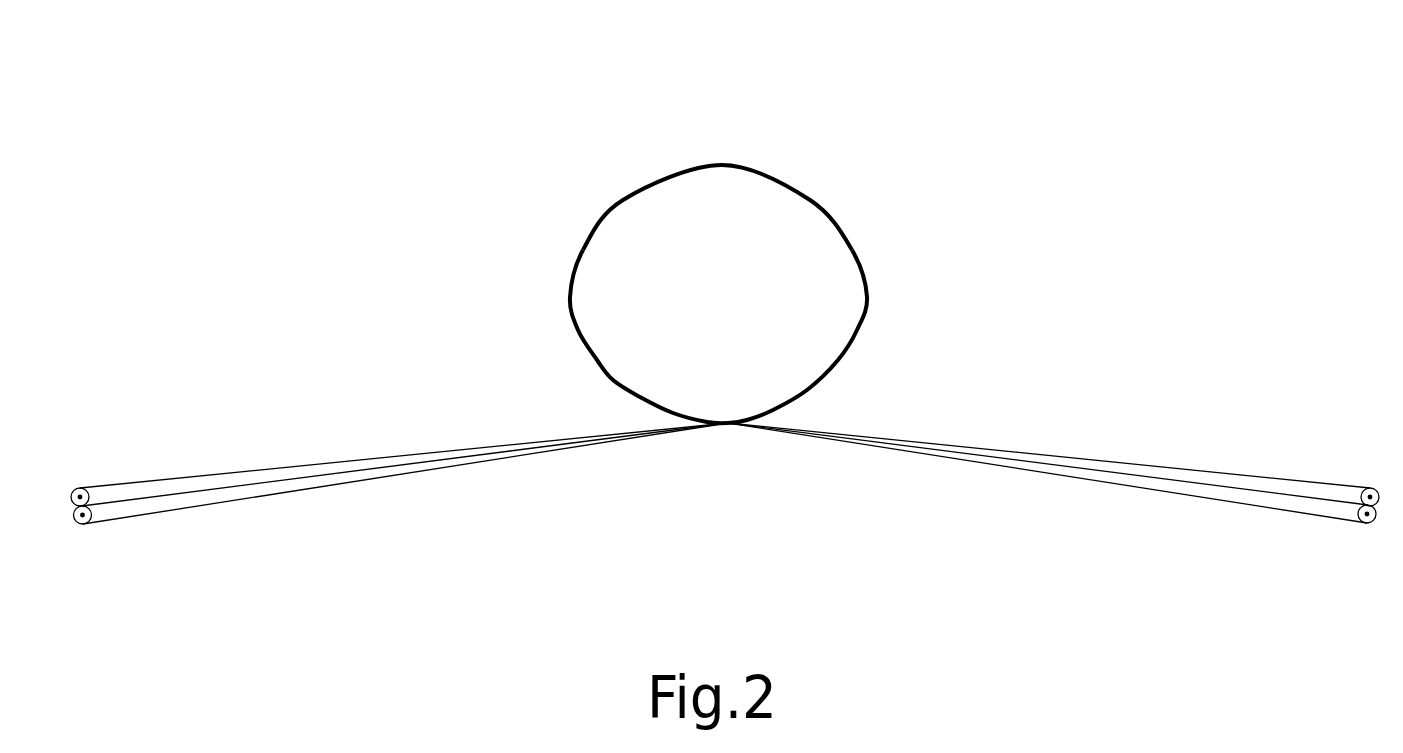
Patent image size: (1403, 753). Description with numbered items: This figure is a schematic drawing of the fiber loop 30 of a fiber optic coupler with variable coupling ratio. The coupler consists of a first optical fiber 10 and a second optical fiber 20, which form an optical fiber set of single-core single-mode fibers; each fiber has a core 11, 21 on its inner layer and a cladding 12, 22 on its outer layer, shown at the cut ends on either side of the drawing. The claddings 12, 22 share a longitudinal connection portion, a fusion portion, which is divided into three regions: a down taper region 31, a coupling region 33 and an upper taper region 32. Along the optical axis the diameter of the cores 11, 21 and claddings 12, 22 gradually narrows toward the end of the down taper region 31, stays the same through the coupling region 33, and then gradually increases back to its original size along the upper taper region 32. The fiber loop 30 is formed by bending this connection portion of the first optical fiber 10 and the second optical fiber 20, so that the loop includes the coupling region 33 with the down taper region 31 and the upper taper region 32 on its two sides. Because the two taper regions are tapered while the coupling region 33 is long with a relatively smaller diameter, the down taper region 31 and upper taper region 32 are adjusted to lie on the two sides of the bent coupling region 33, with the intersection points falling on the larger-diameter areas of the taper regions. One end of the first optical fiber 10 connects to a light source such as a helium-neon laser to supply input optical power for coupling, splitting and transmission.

The first optical fiber 10 is at (393, 419).
The core 11 is at (77, 489).
The cladding 12 is at (81, 491).
The second optical fiber 20 is at (401, 544).
The core 21 is at (79, 524).
The cladding 22 is at (84, 523).
The fiber loop 30 is at (879, 270).
The down taper region 31 is at (549, 399).
The upper taper region 32 is at (866, 399).
The coupling region 33 is at (710, 127).